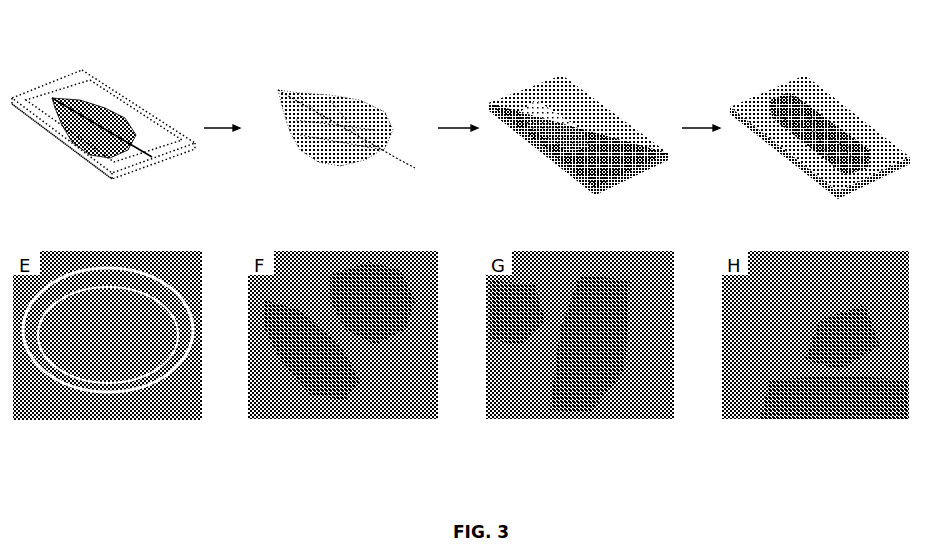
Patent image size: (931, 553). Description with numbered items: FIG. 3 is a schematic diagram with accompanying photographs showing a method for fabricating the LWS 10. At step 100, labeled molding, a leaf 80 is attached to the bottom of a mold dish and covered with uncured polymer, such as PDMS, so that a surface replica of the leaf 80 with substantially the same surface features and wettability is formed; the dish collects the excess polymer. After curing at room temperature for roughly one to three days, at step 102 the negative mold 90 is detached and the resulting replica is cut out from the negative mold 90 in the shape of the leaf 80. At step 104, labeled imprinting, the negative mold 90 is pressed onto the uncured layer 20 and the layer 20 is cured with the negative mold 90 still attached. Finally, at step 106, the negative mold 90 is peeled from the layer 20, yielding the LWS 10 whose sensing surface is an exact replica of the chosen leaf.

The step 100 is at (107, 43).
The step 102 is at (358, 43).
The step 104 is at (583, 43).
The step 106 is at (845, 43).
The leaf 80 is at (117, 118).
The negative mold 90 is at (340, 118).
The layer 20 is at (625, 163).
The LWS 10 is at (882, 133).